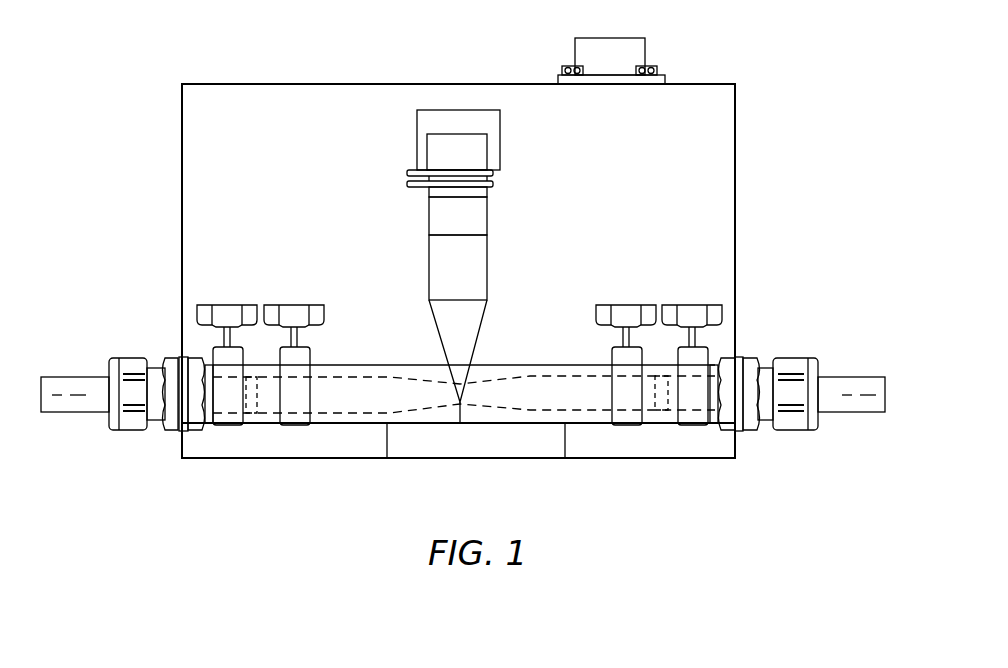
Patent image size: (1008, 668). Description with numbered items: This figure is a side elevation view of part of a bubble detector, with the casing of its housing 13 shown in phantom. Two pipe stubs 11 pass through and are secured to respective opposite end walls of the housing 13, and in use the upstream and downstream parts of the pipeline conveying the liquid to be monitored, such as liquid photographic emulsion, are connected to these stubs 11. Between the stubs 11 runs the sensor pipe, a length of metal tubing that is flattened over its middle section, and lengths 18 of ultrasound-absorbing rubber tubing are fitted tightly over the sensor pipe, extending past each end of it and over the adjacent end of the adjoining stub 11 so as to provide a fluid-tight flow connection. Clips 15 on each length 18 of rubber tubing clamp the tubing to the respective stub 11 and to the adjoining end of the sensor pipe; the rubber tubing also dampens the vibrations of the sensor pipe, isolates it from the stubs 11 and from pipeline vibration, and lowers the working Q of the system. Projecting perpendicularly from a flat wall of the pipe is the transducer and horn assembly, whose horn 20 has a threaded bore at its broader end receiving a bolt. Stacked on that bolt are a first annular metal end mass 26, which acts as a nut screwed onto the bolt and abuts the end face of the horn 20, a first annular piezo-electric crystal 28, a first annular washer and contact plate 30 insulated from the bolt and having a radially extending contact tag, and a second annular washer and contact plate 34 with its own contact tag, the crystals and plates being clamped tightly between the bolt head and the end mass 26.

The pipe stub 11 is at (70, 378).
The housing 13 is at (703, 83).
The clip 15 is at (228, 426).
The ultrasound-absorbing length of rubber tubing 18 is at (387, 458).
The horn 20 is at (459, 266).
The first annular metal end mass 26 is at (437, 218).
The first annular piezo-electric crystal 28 is at (482, 193).
The first annular washer and contact plate 30 is at (410, 184).
The second annular washer and contact plate 34 is at (408, 172).